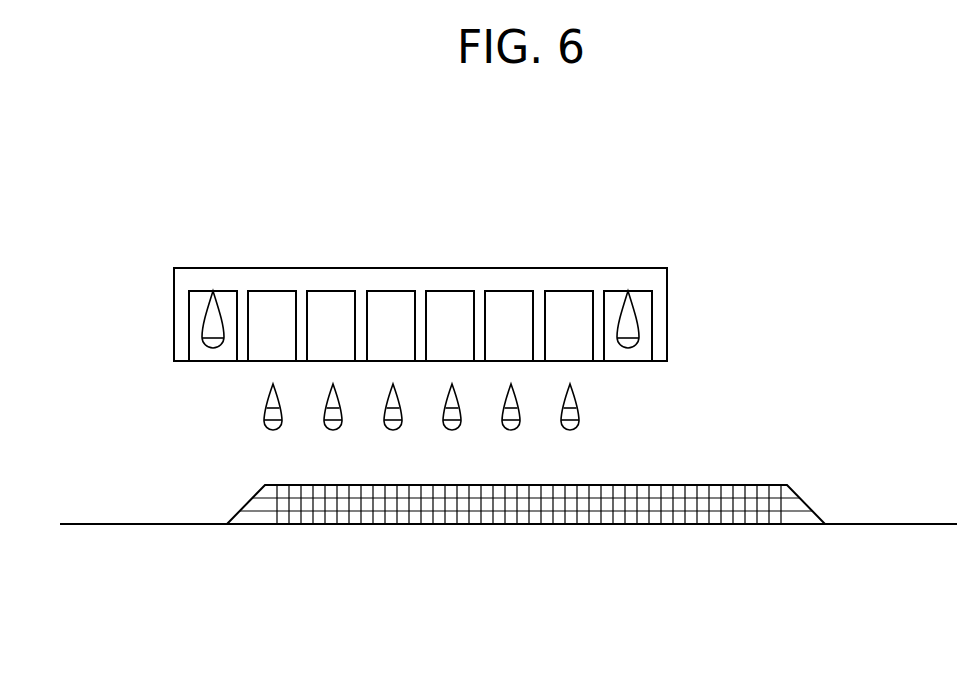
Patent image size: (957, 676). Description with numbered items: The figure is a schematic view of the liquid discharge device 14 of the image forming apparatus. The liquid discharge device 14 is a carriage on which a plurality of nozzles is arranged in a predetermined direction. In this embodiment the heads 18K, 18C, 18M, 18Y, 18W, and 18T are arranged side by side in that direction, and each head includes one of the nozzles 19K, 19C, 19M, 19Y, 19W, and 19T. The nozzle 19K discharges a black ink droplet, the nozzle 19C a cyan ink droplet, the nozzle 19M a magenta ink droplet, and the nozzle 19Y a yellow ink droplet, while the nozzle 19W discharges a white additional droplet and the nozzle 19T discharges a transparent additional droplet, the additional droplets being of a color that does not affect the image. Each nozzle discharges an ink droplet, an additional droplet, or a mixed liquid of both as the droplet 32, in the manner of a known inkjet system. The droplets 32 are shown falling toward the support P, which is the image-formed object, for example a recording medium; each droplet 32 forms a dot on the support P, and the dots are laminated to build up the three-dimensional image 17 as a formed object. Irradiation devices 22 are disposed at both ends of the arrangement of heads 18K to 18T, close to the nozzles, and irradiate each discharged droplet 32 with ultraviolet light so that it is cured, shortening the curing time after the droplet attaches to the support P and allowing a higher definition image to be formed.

The liquid discharge device 14 is at (667, 313).
The head 18K is at (275, 291).
The head 18C is at (332, 291).
The head 18M is at (392, 291).
The head 18Y is at (452, 291).
The head 18W is at (510, 291).
The head 18T is at (557, 291).
The nozzle 19K is at (255, 361).
The nozzle 19C is at (323, 361).
The nozzle 19M is at (382, 361).
The nozzle 19Y is at (441, 361).
The nozzle 19W is at (500, 361).
The nozzle 19T is at (560, 361).
The irradiation device 22 is at (215, 291).
The droplet 32 is at (579, 410).
The image 17 is at (797, 490).
The support P is at (942, 537).